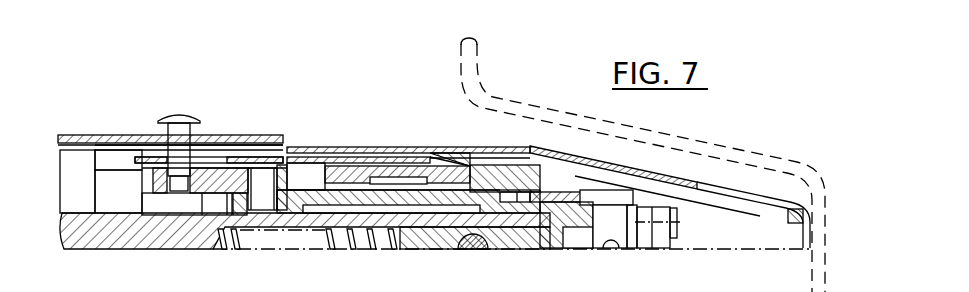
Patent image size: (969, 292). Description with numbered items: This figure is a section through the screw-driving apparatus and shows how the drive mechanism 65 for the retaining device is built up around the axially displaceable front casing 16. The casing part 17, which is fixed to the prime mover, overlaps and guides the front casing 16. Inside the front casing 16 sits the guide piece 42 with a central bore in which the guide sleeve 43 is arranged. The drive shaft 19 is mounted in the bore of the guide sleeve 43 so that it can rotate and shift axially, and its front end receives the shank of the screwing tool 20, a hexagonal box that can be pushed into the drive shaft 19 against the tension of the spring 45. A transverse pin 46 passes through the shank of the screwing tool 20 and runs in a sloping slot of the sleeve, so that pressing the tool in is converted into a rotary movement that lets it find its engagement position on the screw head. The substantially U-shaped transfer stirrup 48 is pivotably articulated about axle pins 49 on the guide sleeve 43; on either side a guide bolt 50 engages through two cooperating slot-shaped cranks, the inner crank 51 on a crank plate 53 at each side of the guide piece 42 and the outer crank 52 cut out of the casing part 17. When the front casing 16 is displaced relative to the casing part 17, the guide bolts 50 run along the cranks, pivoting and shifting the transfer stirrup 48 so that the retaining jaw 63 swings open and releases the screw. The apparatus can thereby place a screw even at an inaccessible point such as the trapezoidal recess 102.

The casing part 17 is at (75, 135).
The guide bolt 50 is at (185, 117).
The outer crank 52 is at (144, 146).
The inner crank 51 is at (215, 157).
The axle pin 49 is at (266, 172).
The crank plate 53 is at (328, 160).
The guide piece 42 is at (372, 168).
The guide sleeve 43 is at (427, 157).
The retaining jaw 63 is at (553, 192).
The front casing 16 is at (600, 165).
The trapezoidal recess 102 is at (752, 185).
The drive mechanism 65 is at (276, 85).
The drive shaft 19 is at (97, 240).
The transfer stirrup 48 is at (204, 194).
The spring 45 is at (384, 257).
The transverse pin 46 is at (480, 252).
The screwing tool 20 is at (560, 240).